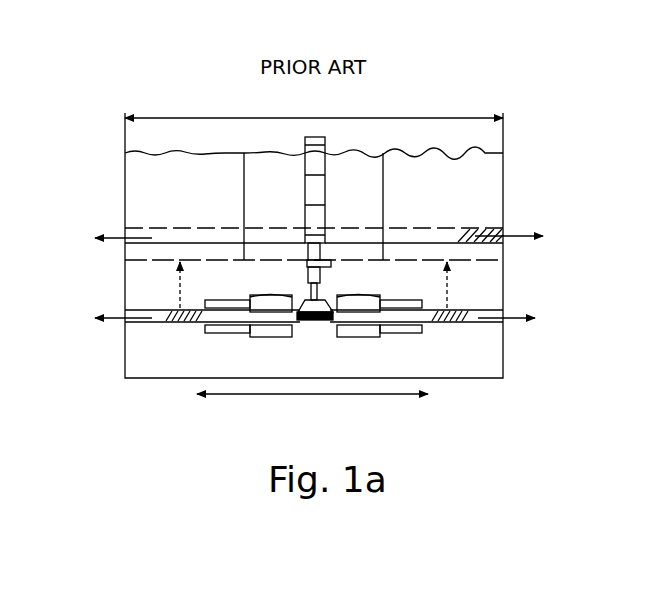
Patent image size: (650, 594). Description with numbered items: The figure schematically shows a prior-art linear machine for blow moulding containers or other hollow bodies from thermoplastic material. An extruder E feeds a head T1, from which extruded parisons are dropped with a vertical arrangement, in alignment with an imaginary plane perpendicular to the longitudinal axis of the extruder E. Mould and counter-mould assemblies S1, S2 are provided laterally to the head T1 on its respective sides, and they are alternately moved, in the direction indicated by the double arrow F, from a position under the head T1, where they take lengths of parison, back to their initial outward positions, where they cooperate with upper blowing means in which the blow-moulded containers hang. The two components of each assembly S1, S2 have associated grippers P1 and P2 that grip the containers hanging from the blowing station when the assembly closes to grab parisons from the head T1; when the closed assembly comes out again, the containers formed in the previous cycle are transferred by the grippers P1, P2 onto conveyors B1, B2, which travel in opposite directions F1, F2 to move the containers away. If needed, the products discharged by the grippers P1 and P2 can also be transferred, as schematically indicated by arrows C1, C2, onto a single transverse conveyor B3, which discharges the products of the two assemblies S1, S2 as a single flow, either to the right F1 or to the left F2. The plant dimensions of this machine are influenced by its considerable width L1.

The width of the machine L1 is at (314, 105).
The extruder E is at (310, 192).
The head T1 is at (323, 305).
The single transverse conveyor B3 is at (460, 241).
The direction to the right F1 is at (512, 310).
The direction to the left F2 is at (115, 310).
The transfer arrow C2 is at (178, 283).
The transfer arrow C1 is at (450, 282).
The mould and counter-mould assembly S2 is at (283, 297).
The mould and counter-mould assembly S1 is at (361, 302).
The conveyor B2 is at (155, 323).
The conveyor B1 is at (482, 325).
The gripper P2 is at (233, 327).
The gripper P1 is at (397, 323).
The double arrow F is at (318, 396).